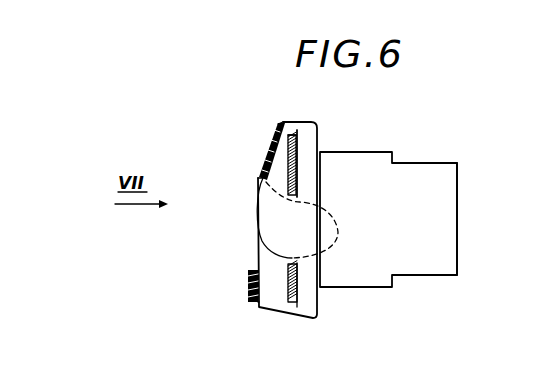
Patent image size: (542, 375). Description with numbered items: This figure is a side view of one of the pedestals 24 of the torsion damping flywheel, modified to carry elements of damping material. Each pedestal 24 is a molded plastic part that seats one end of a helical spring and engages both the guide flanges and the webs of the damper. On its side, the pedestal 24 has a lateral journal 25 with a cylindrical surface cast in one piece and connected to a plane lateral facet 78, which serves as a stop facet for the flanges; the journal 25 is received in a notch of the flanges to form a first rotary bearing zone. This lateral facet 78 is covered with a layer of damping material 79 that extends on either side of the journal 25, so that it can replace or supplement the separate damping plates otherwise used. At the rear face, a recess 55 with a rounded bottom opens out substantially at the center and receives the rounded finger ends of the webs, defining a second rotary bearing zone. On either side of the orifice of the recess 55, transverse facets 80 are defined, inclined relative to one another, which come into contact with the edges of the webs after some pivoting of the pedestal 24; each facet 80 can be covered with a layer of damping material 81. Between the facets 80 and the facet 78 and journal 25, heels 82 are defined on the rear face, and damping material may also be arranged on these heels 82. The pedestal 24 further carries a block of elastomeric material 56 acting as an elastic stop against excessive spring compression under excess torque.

The pedestal 24 is at (452, 153).
The journal 25 is at (265, 233).
The recess 55 is at (324, 313).
The block of elastomeric material 56 is at (464, 257).
The plane lateral facet 78 is at (306, 152).
The layer of damping material 79 is at (288, 192).
The transverse facet 80 is at (277, 130).
The layer of damping material 81 is at (268, 152).
The heel 82 is at (258, 179).